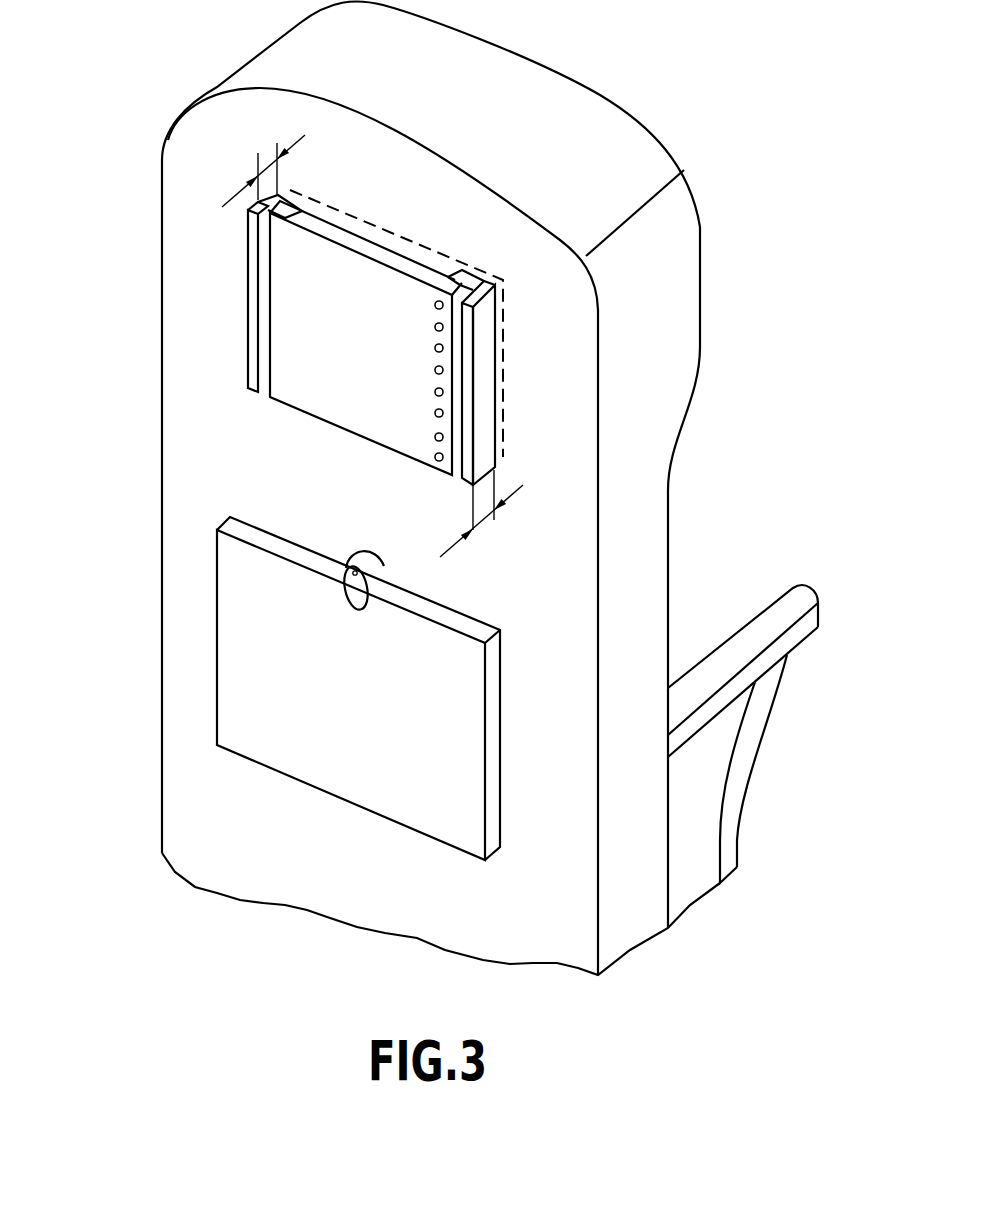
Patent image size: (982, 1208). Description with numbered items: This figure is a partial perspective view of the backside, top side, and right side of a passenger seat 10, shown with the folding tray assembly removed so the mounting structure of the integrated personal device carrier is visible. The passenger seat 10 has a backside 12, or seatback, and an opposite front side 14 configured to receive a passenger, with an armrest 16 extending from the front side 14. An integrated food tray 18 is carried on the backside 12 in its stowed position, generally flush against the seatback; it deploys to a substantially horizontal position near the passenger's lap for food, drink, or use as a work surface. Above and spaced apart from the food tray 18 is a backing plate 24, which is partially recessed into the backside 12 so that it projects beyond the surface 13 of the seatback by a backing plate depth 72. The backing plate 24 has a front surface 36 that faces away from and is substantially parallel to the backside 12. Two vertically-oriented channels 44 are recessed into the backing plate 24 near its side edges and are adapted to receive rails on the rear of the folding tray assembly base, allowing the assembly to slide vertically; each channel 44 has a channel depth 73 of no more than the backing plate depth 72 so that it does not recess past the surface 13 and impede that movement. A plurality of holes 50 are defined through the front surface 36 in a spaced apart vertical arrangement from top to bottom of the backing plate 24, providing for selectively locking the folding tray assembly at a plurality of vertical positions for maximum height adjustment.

The passenger seat 10 is at (113, 213).
The backside 12 is at (193, 152).
The surface of the backside 13 is at (551, 437).
The front side 14 is at (702, 228).
The armrest 16 is at (780, 608).
The food tray 18 is at (240, 662).
The backing plate 24 is at (337, 233).
The front surface 36 is at (326, 349).
The vertically-oriented channel 44 is at (265, 303).
The holes 50 is at (434, 437).
The backing plate depth 72 is at (482, 522).
The channel depth 73 is at (268, 177).